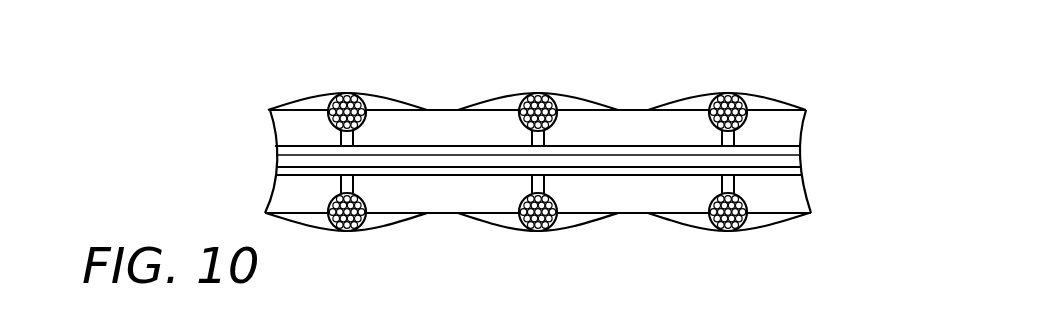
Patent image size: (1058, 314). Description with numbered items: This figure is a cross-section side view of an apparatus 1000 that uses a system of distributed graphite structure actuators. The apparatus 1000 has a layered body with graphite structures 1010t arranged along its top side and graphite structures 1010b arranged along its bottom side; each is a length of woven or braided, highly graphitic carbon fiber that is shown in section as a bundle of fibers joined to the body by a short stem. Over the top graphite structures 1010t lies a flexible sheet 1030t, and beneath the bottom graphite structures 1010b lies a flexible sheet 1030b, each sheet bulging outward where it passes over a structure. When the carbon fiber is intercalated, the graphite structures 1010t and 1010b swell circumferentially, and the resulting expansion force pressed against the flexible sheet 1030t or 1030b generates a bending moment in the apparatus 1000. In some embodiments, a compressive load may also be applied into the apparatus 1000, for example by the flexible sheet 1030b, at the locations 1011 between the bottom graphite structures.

The apparatus 1000 is at (479, 163).
The graphite structure 1010t is at (346, 93).
The graphite structure 1010b is at (539, 234).
The locations 1011 is at (445, 216).
The flexible sheet 1030t is at (772, 101).
The flexible sheet 1030b is at (772, 223).